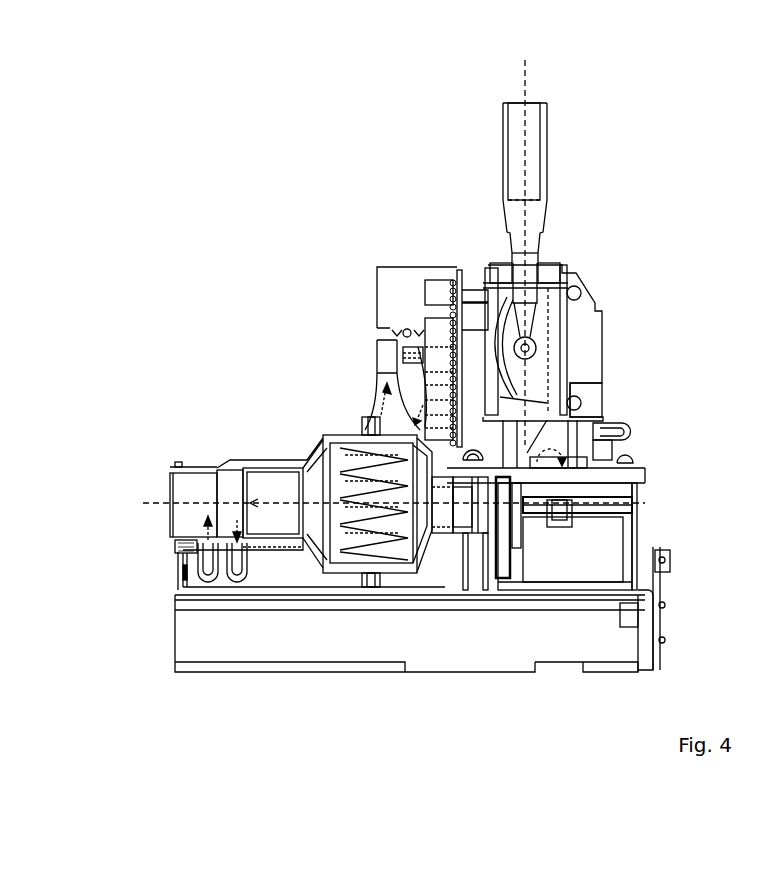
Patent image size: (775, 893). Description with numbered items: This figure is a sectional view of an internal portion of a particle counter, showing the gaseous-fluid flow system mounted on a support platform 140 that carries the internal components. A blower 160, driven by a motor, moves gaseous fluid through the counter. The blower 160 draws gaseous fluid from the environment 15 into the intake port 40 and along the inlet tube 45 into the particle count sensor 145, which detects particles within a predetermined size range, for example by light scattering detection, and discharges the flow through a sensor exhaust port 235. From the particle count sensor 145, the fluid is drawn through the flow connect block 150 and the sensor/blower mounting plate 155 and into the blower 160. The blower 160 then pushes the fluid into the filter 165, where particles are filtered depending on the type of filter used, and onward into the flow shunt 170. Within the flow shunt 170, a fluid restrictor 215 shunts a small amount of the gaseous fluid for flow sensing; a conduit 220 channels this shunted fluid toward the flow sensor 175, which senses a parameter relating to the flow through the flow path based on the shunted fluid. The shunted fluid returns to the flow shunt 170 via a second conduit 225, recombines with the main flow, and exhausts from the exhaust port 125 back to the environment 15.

The environment 15 is at (525, 78).
The intake port 40 is at (533, 101).
The inlet tube 45 is at (547, 172).
The exhaust port 125 is at (170, 525).
The support platform 140 is at (175, 610).
The particle count sensor 145 is at (552, 348).
The flow connect block 150 is at (635, 435).
The sensor/blower mounting plate 155 is at (637, 477).
The blower 160 is at (572, 565).
The filter 165 is at (323, 433).
The flow shunt 170 is at (258, 465).
The flow sensor 175 is at (377, 267).
The fluid restrictor 215 is at (225, 478).
The conduit 220 is at (285, 550).
The conduit 225 is at (222, 575).
The sensor exhaust port 235 is at (598, 383).